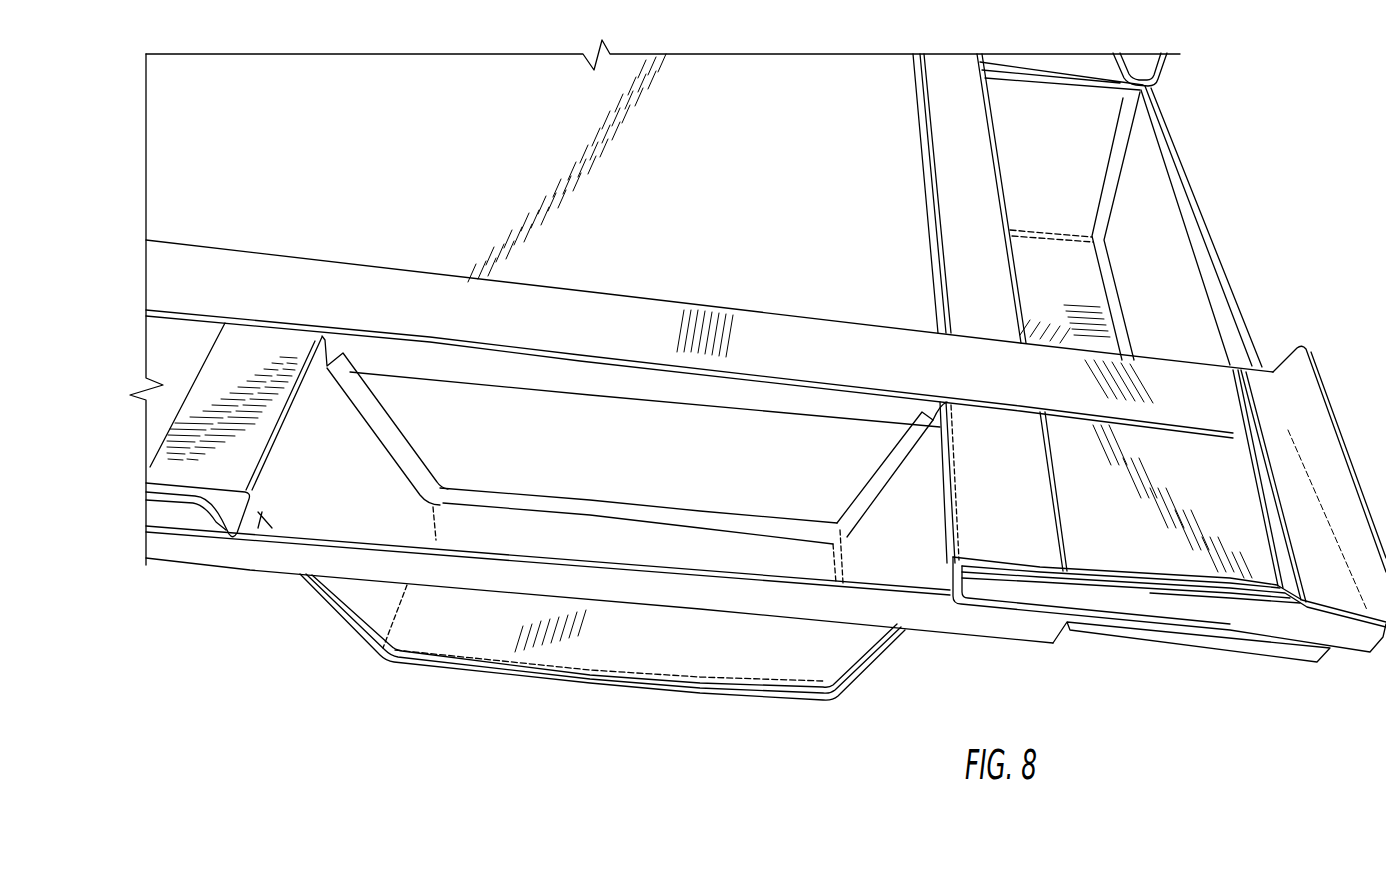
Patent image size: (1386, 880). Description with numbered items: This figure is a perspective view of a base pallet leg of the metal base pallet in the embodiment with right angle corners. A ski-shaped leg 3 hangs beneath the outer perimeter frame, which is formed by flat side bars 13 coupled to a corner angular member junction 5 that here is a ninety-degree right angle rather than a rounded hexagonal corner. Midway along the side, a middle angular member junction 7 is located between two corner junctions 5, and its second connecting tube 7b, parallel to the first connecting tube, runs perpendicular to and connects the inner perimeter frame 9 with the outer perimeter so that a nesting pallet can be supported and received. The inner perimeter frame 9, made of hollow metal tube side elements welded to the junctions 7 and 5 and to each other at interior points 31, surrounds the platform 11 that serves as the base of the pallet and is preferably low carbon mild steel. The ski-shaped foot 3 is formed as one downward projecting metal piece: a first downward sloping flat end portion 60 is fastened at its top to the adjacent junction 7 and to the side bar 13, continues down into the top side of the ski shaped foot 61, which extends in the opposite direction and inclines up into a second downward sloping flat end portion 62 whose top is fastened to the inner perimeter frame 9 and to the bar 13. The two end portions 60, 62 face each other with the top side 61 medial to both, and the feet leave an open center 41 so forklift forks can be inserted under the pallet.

The ski-shaped leg 3 is at (606, 555).
The corner angular member junction 5 is at (1200, 482).
The middle angular member junction 7 is at (165, 344).
The second connecting tube 7b is at (210, 428).
The inner perimeter frame 9 is at (600, 315).
The platform 11 is at (702, 107).
The side bar 13 is at (1203, 272).
The interior point 31 is at (987, 368).
The open center 41 is at (1087, 272).
The first downward sloping flat end portion 60 is at (337, 487).
The top side of ski shaped foot 61 is at (630, 638).
The second downward sloping flat end portion 62 is at (910, 542).